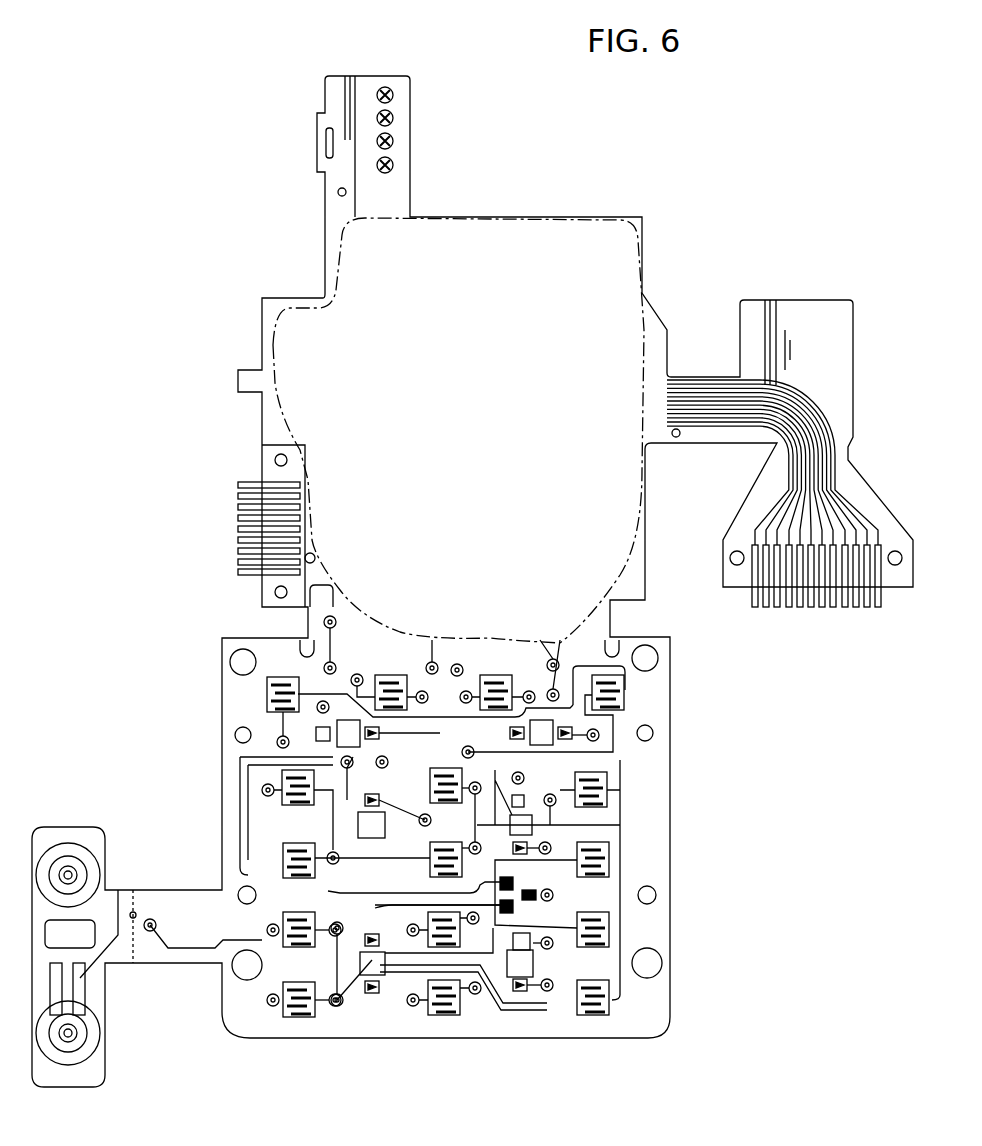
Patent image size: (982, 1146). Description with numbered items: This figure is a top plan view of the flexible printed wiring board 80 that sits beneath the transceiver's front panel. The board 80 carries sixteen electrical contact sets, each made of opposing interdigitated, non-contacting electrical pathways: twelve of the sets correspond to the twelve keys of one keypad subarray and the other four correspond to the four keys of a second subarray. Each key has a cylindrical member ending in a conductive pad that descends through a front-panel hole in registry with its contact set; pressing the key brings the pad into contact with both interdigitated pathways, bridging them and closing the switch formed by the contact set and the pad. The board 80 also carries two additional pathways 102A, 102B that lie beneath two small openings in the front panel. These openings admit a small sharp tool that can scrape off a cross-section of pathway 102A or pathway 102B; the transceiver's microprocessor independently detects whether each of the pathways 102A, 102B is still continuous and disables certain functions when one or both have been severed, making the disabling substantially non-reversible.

The flexible printed wiring board 80 is at (560, 218).
The PWB pathway 102A is at (393, 893).
The PWB pathway 102B is at (417, 907).